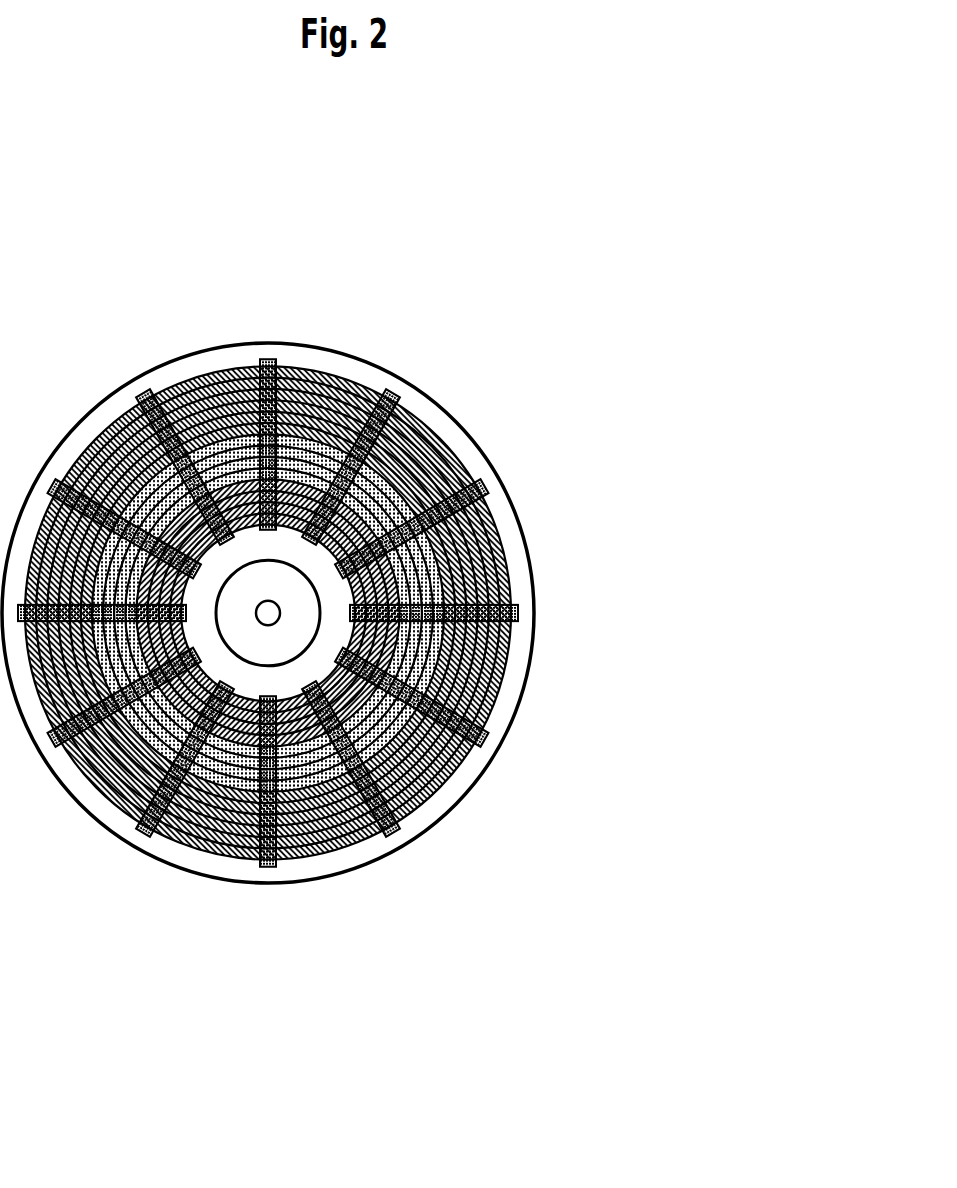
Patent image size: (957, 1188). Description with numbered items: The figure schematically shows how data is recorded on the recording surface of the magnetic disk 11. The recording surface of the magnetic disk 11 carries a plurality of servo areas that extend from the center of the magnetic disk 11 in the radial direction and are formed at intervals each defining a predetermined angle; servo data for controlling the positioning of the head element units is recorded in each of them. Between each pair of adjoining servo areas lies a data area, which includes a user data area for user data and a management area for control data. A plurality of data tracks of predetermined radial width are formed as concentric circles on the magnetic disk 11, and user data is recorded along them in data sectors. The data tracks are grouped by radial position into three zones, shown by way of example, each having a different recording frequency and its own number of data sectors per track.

The magnetic disk 11 is at (192, 935).